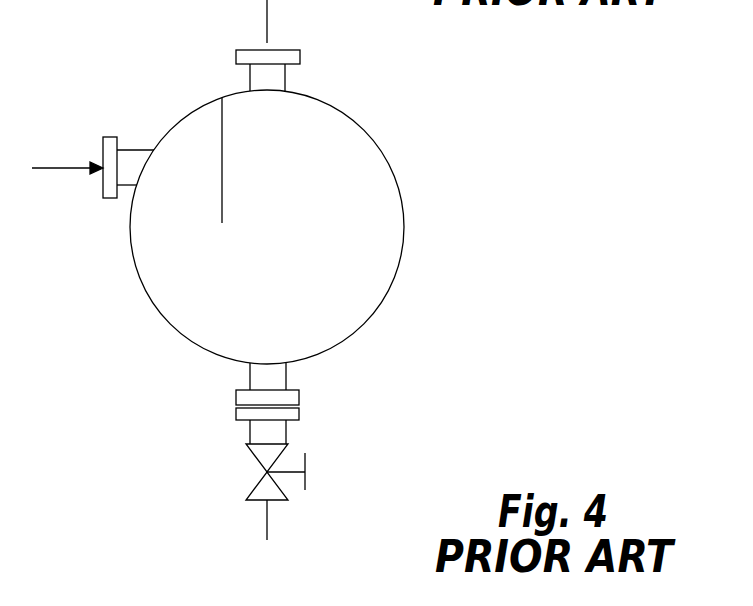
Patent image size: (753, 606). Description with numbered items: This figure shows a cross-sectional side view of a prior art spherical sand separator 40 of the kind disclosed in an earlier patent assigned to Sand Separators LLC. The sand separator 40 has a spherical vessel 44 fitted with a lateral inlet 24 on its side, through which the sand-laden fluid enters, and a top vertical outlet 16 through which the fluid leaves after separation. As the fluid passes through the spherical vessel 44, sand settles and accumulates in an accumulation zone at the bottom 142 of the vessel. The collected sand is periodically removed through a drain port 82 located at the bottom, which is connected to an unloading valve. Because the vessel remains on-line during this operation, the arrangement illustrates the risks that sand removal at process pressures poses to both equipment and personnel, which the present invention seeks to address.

The spherical sand separator 40 is at (118, 302).
The spherical vessel 44 is at (375, 141).
The top vertical outlet 16 is at (250, 78).
The lateral inlet 24 is at (125, 150).
The bottom of the vessel 142 is at (327, 350).
The drain port 82 is at (286, 378).